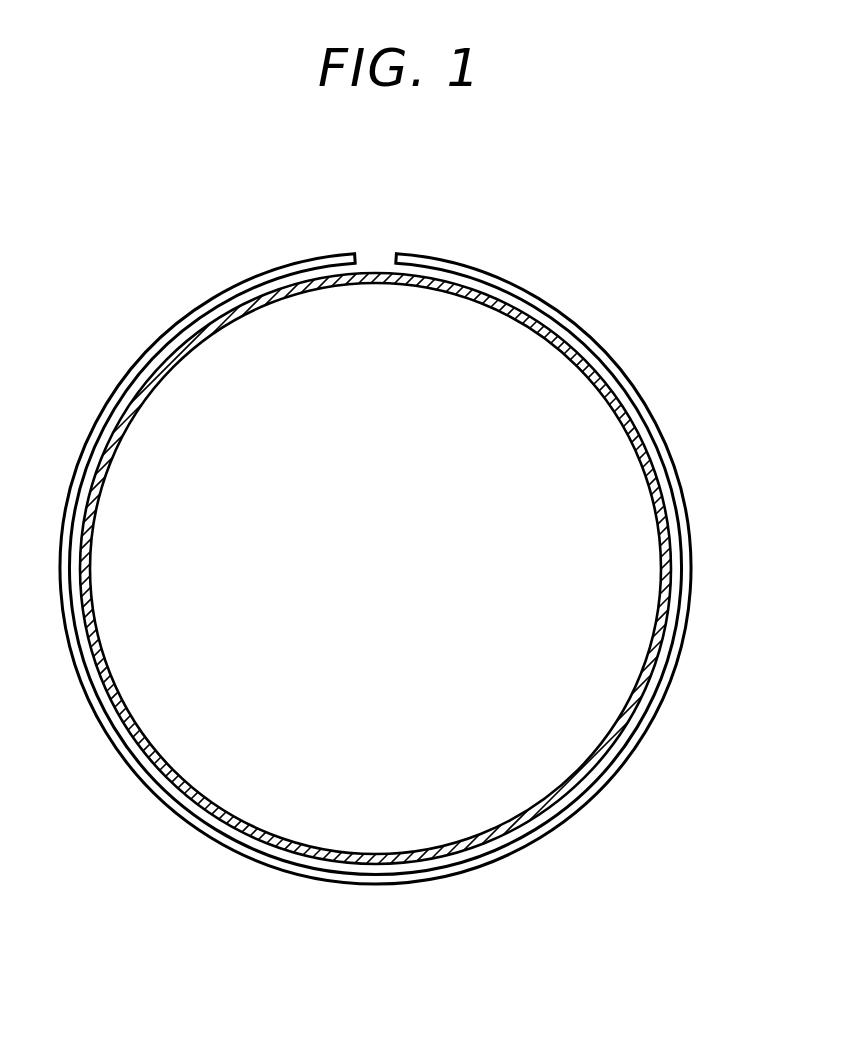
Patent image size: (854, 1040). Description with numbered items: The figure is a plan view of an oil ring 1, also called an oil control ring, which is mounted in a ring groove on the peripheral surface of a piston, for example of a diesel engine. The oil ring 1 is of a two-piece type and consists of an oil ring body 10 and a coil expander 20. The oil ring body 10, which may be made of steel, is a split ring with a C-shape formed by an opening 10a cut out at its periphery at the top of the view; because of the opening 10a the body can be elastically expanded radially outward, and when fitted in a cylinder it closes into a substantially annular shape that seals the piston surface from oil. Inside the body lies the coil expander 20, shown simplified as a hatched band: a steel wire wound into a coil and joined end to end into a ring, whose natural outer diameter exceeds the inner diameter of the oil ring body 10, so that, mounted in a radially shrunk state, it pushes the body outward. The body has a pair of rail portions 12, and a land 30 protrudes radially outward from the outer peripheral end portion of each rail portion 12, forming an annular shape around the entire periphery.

The oil ring 1 is at (565, 258).
The oil ring body 10 is at (580, 329).
The opening 10a is at (377, 254).
The rail portion 12 is at (648, 437).
The coil expander 20 is at (373, 283).
The land 30 is at (624, 371).